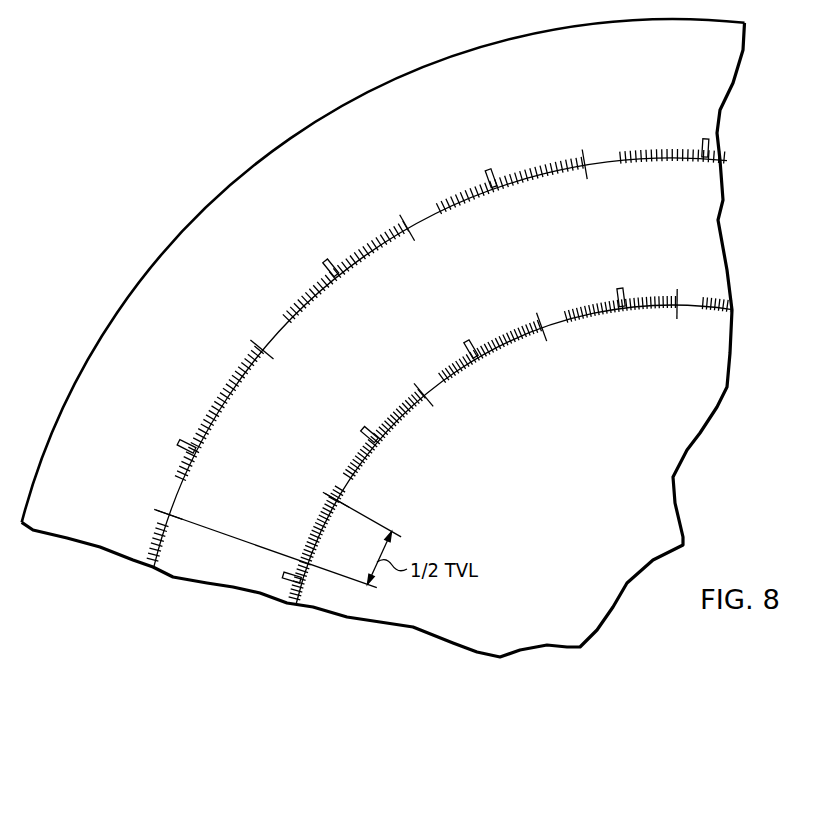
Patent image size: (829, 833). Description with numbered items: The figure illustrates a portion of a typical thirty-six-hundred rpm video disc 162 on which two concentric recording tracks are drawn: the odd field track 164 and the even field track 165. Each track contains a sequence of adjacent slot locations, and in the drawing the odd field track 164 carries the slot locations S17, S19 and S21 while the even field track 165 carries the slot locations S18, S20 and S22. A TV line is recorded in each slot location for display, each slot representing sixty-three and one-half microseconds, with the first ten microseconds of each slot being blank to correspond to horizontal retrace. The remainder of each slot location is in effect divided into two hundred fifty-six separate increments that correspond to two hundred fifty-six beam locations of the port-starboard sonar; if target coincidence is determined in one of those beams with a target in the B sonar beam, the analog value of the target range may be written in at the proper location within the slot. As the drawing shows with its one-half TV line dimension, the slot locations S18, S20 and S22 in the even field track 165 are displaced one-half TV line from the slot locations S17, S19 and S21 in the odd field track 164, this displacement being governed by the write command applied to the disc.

The video disc 162 is at (200, 228).
The odd field track 164 is at (439, 325).
The even field track 165 is at (507, 423).
The slot location S17 is at (216, 413).
The slot location S18 is at (385, 435).
The slot location S19 is at (346, 272).
The slot location S20 is at (491, 342).
The slot location S21 is at (511, 171).
The slot location S22 is at (693, 264).